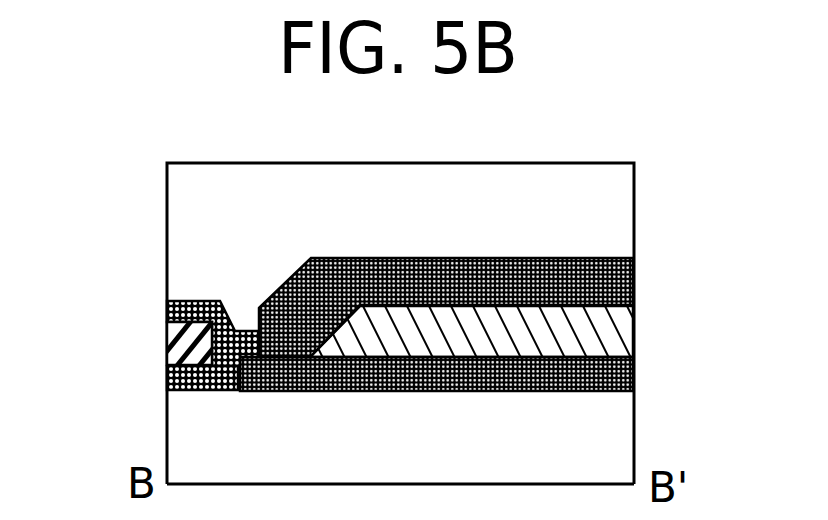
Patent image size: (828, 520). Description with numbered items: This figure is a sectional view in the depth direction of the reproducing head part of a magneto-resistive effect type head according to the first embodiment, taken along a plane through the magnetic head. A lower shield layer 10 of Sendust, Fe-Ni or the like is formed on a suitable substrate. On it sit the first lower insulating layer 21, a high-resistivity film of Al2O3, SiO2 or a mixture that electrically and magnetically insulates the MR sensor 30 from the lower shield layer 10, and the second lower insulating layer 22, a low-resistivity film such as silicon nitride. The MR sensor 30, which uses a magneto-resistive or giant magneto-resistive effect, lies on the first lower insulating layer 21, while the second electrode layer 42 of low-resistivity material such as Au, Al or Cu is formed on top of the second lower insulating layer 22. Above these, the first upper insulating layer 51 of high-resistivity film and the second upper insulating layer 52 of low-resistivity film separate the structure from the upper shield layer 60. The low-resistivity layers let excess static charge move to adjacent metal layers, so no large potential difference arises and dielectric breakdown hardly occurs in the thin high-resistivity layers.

The lower shield layer 10 is at (187, 422).
The first lower insulating layer 21 is at (172, 374).
The second lower insulating layer 22 is at (617, 375).
The MR sensor 30 is at (172, 340).
The second electrode layer 42 is at (617, 328).
The first upper insulating layer 51 is at (205, 303).
The second upper insulating layer 52 is at (617, 283).
The upper shield layer 60 is at (183, 209).